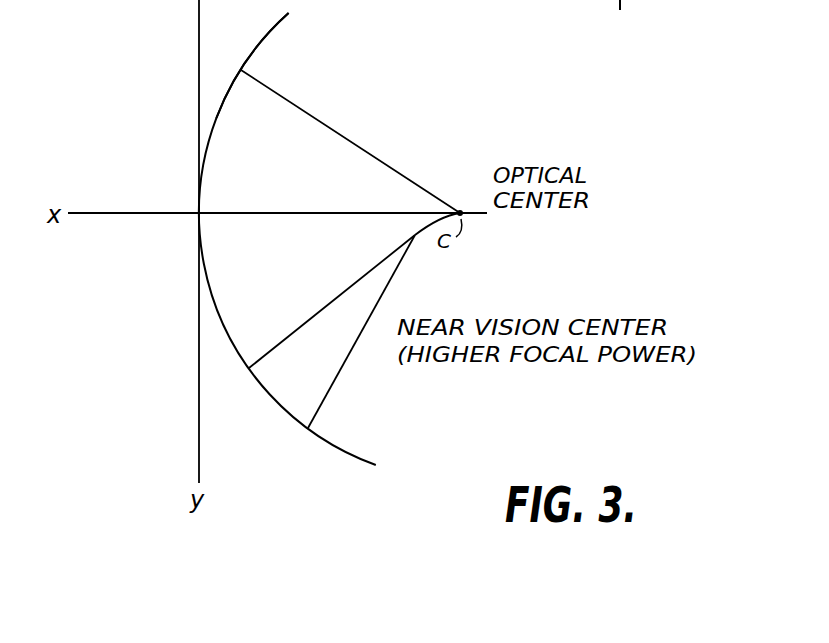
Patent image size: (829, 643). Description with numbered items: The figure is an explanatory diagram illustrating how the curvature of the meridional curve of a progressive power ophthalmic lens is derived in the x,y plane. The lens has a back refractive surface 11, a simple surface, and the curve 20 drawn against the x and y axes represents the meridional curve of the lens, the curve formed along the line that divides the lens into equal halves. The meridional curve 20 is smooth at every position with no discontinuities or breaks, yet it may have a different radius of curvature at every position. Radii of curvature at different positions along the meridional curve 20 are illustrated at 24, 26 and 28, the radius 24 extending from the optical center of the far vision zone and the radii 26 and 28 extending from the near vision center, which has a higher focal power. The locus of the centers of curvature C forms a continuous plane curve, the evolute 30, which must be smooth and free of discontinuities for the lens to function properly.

The back refractive surface 11 is at (218, 118).
The meridional curve 20 is at (269, 35).
The radius of curvature 24 is at (353, 141).
The radius of curvature 26 is at (296, 332).
The radius of curvature 28 is at (330, 388).
The evolute 30 is at (421, 231).